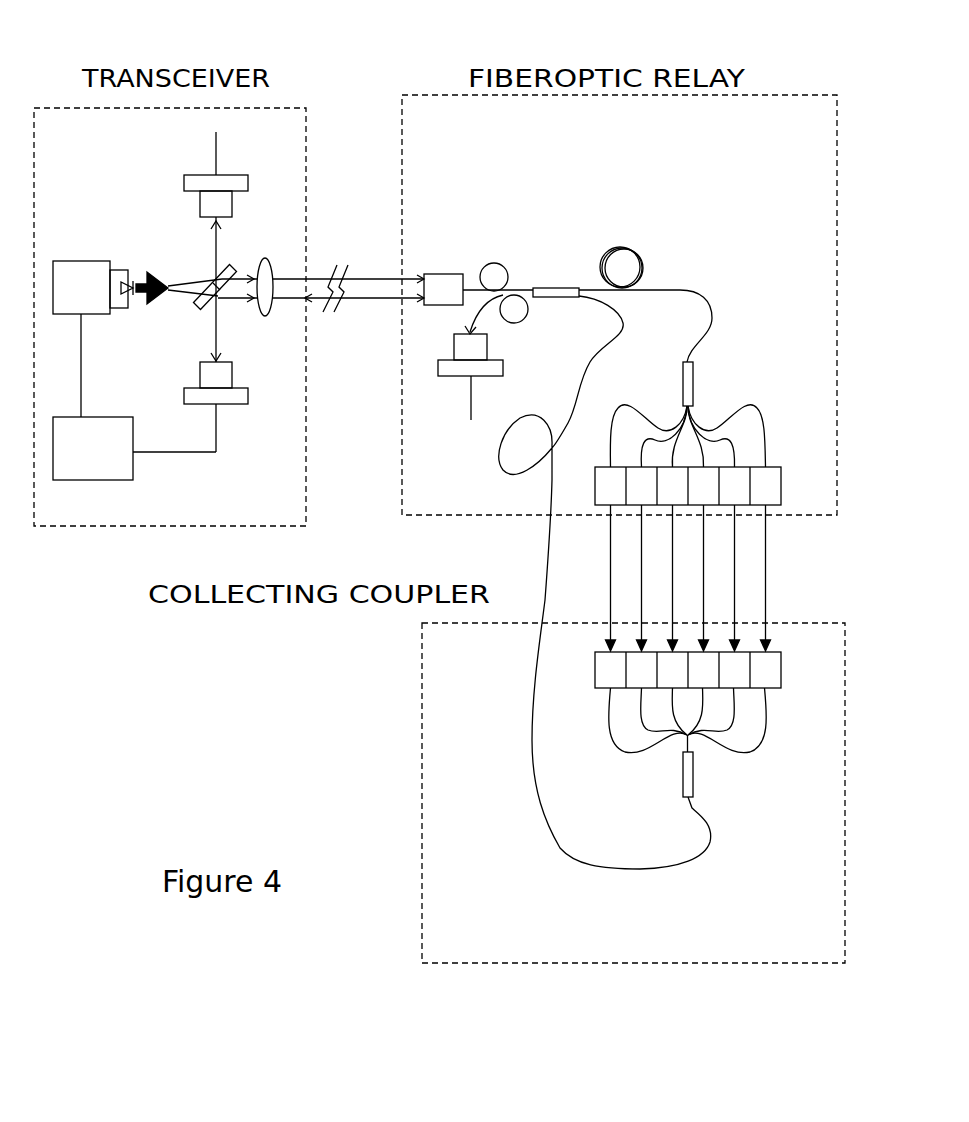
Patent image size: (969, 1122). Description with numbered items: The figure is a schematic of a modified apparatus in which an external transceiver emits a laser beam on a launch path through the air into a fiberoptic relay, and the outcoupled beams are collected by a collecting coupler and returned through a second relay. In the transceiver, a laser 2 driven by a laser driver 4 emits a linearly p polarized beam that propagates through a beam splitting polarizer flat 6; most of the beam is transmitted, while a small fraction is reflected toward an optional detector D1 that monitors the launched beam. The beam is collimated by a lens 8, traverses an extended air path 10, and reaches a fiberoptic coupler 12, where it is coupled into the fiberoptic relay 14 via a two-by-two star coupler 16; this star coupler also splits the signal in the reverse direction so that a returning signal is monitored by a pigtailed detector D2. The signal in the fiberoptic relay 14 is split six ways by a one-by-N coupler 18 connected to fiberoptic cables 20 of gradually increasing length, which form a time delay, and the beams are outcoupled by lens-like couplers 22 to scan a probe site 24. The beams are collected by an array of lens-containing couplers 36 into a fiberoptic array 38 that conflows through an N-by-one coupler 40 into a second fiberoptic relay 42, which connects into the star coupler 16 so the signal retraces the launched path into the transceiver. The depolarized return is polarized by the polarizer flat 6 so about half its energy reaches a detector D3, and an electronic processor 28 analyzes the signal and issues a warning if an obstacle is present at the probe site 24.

The laser 2 is at (139, 270).
The laser driver 4 is at (70, 230).
The beam splitting polarizer flat 6 is at (222, 302).
The lens 8 is at (265, 274).
The extended air path 10 is at (343, 273).
The fiberoptic coupler 12 is at (443, 274).
The fiberoptic relay 14 is at (645, 304).
The 2×2 star coupler 16 is at (577, 283).
The 1×N coupler 18 is at (745, 382).
The fiberoptic cables 20 is at (714, 436).
The lens-like couplers 22 is at (741, 504).
The probe site 24 is at (727, 578).
The electronic processor 28 is at (148, 478).
The lens-containing couplers 36 is at (600, 675).
The fiberoptic array 38 is at (753, 725).
The N×1 coupler 40 is at (744, 778).
The second fiberoptic relay 42 is at (574, 606).
The optional detector D1 is at (230, 167).
The pigtailed detector D2 is at (418, 355).
The detector D3 is at (231, 408).